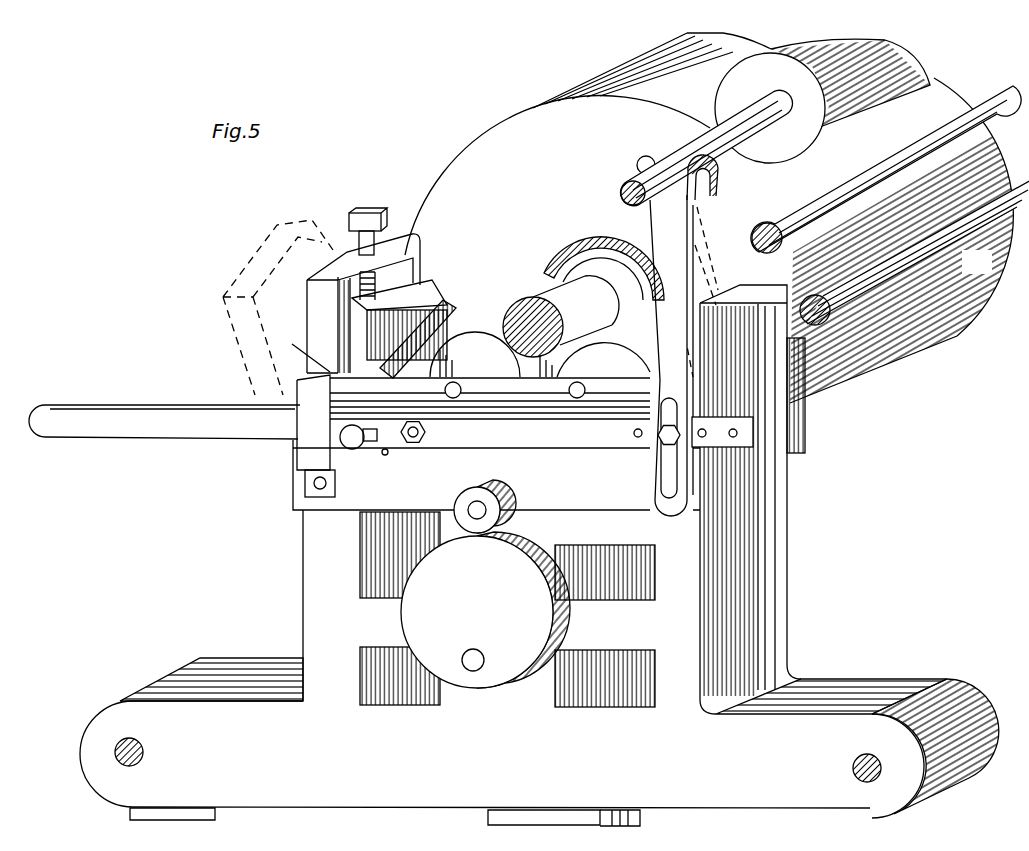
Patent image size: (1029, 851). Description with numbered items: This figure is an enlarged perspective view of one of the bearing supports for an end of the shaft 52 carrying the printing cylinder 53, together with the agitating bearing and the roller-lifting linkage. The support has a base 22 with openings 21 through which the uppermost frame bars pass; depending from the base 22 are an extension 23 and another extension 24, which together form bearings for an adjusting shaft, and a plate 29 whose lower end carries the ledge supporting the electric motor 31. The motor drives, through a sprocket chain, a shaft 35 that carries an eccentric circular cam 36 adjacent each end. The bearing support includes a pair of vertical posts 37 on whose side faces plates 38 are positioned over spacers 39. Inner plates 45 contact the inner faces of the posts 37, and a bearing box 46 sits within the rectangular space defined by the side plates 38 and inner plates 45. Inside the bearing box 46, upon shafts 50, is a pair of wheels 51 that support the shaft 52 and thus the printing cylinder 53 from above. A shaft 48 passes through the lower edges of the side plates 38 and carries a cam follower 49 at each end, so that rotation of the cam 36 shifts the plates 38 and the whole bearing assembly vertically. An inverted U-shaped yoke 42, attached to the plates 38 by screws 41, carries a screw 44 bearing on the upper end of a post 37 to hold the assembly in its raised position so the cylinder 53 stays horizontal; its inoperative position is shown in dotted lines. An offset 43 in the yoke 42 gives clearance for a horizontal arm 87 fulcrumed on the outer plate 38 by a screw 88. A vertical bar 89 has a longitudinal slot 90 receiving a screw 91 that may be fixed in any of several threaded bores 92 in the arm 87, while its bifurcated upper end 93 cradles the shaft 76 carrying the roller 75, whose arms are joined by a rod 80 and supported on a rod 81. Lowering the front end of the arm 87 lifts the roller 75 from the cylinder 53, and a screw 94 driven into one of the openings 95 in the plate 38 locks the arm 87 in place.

The openings 21 is at (114, 752).
The base 22 is at (100, 714).
The extension 23 is at (176, 808).
The extension 24 is at (552, 815).
The plate 29 is at (604, 812).
The electric motor 31 is at (635, 338).
The shaft 35 is at (472, 672).
The eccentric circular cam 36 is at (508, 672).
The vertical posts 37 is at (395, 287).
The plates 38 is at (604, 505).
The spacers 39 is at (292, 344).
The screws 41 is at (318, 483).
The inverted U-shaped yoke 42 is at (240, 310).
The offset 43 is at (310, 450).
The screw 44 is at (349, 220).
The inner plates 45 is at (442, 318).
The bearing box 46 is at (455, 332).
The shaft 48 is at (466, 513).
The cam follower 49 is at (506, 494).
The shafts 50 is at (460, 396).
The wheels 51 is at (536, 302).
The shaft 52 is at (556, 282).
The printing cylinder 53 is at (490, 132).
The roller 75 is at (740, 78).
The shaft 76 is at (683, 147).
The rod 80 is at (898, 160).
The rod 81 is at (945, 250).
The horizontal arm 87 is at (137, 417).
The screw 88 is at (428, 432).
The vertical bar 89 is at (683, 256).
The longitudinal slot 90 is at (678, 514).
The screw 91 is at (671, 405).
The threaded bores 92 is at (756, 433).
The bifurcated upper end 93 is at (636, 163).
The screw 94 is at (357, 449).
The openings 95 is at (389, 456).